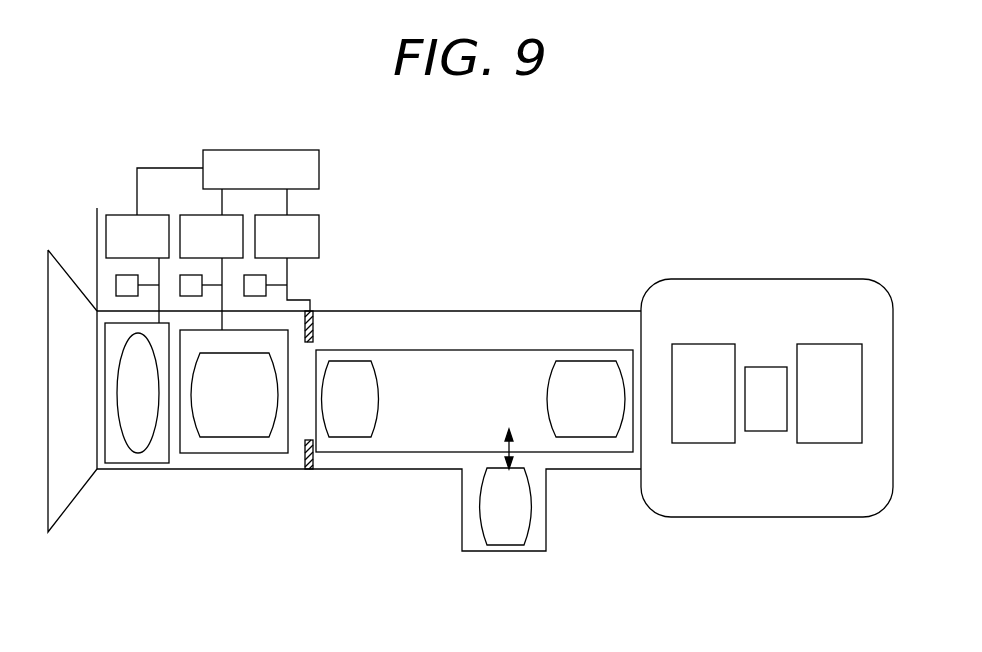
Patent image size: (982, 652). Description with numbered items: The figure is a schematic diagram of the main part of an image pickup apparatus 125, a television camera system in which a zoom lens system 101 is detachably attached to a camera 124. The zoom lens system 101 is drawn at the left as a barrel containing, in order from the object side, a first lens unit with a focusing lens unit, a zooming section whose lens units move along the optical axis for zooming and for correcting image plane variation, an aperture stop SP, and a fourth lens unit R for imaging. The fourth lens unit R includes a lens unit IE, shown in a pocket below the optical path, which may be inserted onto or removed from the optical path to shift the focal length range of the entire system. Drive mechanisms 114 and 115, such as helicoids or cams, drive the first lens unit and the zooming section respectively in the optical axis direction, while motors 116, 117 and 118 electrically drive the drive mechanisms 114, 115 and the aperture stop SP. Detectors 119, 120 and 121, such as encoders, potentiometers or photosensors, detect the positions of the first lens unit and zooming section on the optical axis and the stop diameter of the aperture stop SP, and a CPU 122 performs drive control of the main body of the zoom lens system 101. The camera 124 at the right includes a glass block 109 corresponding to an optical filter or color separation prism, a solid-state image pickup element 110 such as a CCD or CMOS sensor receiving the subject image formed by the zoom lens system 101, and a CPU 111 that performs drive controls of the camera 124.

The zoom lens system 101 is at (58, 267).
The glass block 109 is at (703, 393).
The solid-state image pickup element 110 is at (766, 399).
The CPU 111 is at (829, 393).
The drive mechanism 114 is at (143, 463).
The drive mechanism 115 is at (222, 453).
The motor 116 is at (137, 269).
The motor 117 is at (211, 272).
The motor 118 is at (287, 263).
The detector 119 is at (116, 283).
The detector 120 is at (179, 275).
The detector 121 is at (266, 278).
The CPU 122 is at (228, 182).
The camera 124 is at (777, 279).
The image pickup apparatus 125 is at (88, 563).
The aperture stop SP is at (307, 469).
The fourth lens unit R is at (588, 361).
The lens unit IE is at (481, 505).